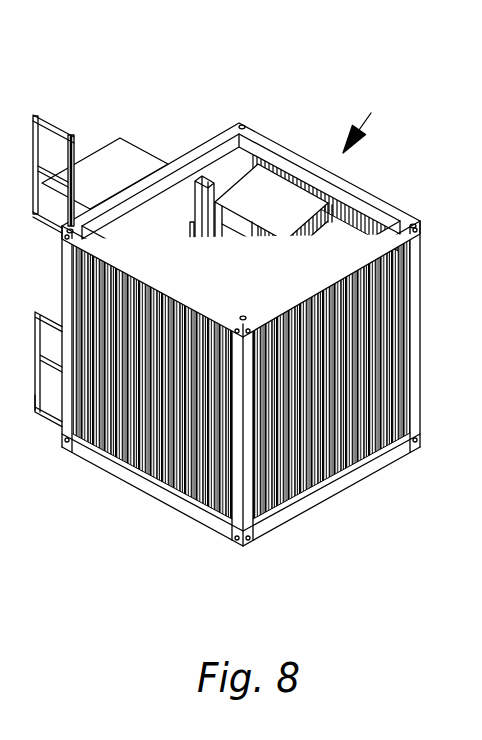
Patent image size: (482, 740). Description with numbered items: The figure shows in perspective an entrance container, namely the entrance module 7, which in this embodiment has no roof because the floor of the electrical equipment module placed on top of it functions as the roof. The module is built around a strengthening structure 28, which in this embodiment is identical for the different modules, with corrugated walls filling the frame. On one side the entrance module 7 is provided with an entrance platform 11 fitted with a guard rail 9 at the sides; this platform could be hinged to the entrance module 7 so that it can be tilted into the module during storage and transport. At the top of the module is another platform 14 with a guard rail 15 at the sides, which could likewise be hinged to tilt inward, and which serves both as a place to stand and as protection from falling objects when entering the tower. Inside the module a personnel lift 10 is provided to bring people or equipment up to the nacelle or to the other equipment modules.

The entrance module 7 is at (365, 119).
The guard rail 9 is at (35, 308).
The personnel lift 10 is at (270, 197).
The entrance platform 11 is at (53, 405).
The platform 14 is at (108, 155).
The guard rail 15 is at (35, 115).
The strengthening structure 28 is at (382, 203).